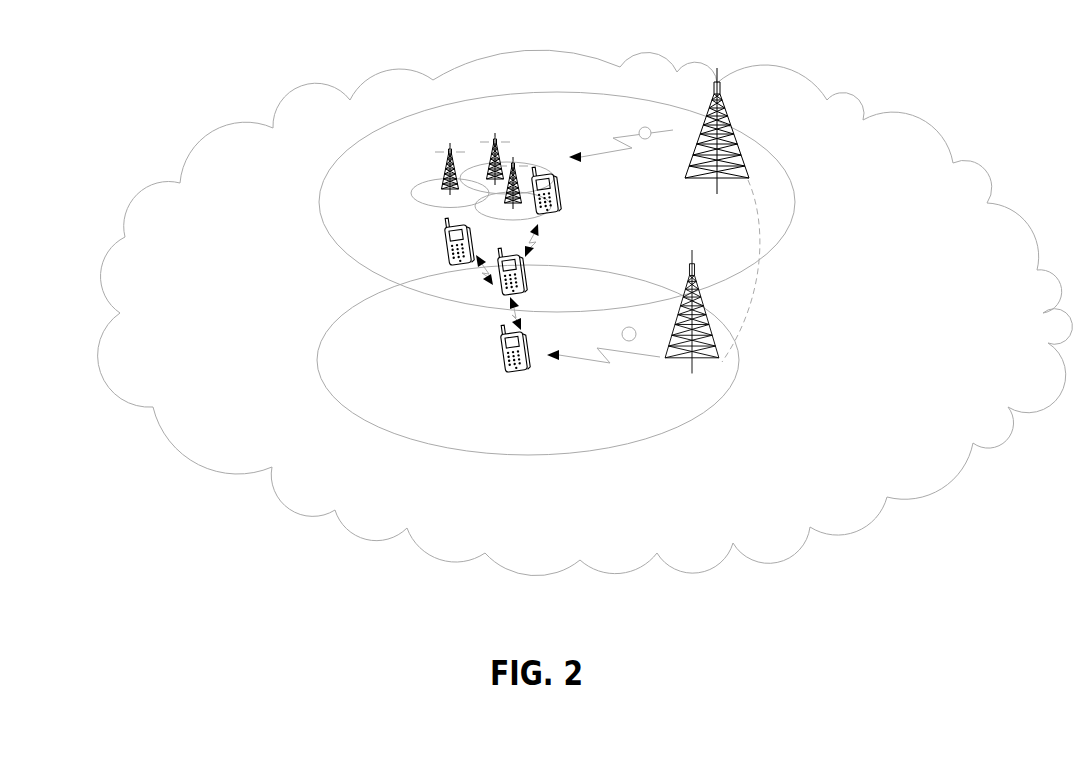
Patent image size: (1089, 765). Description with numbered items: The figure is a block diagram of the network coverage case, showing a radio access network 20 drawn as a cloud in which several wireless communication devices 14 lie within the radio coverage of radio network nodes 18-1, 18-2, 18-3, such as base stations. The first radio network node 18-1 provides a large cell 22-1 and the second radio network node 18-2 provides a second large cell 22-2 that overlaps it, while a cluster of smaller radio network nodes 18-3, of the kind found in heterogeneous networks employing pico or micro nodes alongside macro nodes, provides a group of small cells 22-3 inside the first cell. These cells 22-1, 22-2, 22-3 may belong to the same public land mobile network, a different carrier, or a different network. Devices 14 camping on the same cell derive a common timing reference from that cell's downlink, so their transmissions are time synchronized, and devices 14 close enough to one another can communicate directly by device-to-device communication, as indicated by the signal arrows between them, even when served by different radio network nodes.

The wireless communication device 14 is at (503, 342).
The radio network node 18-1 is at (720, 97).
The radio network node 18-2 is at (720, 360).
The radio network node 18-3 is at (442, 170).
The radio access network 20 is at (585, 313).
The cell 22-1 is at (793, 223).
The cell 22-2 is at (692, 418).
The cell 22-3 is at (413, 192).